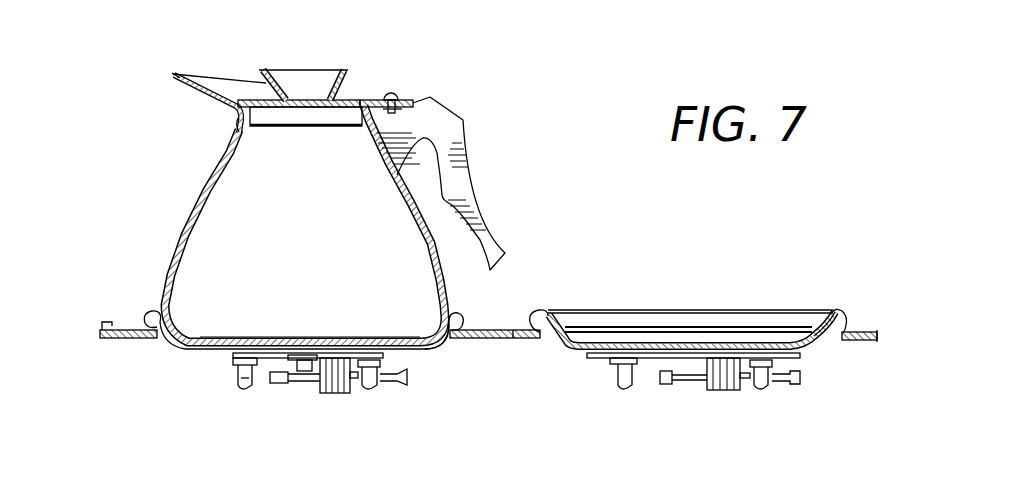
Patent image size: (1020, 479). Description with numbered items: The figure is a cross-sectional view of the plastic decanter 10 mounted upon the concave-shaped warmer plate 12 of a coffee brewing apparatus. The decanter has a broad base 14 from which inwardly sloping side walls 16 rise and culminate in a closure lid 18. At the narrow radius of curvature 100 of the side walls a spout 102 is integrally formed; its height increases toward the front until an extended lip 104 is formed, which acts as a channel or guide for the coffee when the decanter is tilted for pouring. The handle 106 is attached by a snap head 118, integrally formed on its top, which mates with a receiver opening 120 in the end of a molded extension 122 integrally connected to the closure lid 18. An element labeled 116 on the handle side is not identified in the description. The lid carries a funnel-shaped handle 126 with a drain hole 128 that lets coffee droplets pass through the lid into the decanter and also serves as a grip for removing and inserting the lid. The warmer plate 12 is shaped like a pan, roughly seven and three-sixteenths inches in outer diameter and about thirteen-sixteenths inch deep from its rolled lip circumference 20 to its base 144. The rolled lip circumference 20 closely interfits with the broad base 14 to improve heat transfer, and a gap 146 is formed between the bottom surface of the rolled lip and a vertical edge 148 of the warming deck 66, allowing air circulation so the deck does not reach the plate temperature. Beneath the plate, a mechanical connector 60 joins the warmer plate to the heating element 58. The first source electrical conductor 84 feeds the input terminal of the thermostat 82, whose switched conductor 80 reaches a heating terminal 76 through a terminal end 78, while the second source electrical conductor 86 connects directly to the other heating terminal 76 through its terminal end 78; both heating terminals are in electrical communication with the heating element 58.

The plastic decanter 10 is at (473, 112).
The warmer plate 12 is at (172, 347).
The broad base 14 is at (220, 338).
The inwardly sloping side walls 16 is at (203, 186).
The closure lid 18 is at (343, 98).
The rolled lip circumference 20 is at (153, 300).
The heating element 58 is at (225, 355).
The mechanical connector 60 is at (290, 355).
The warming deck 66 is at (104, 323).
The heating terminal 76 is at (235, 365).
The terminal end 78 is at (243, 374).
The switched conductor 80 is at (370, 390).
The thermostat 82 is at (334, 394).
The first source electrical conductor 84 is at (300, 383).
The second source electrical conductor 86 is at (248, 390).
The narrow radius of curvature 100 is at (237, 127).
The spout 102 is at (219, 86).
The extended lip 104 is at (200, 74).
The handle 106 is at (468, 158).
The handle grip 116 is at (472, 192).
The snap head 118 is at (390, 95).
The receiver opening 120 is at (402, 102).
The molded extension 122 is at (413, 104).
The funnel-shaped handle 126 is at (335, 83).
The drain hole 128 is at (303, 108).
The base 144 is at (423, 344).
The gap 146 is at (540, 326).
The vertical edge 148 is at (158, 347).